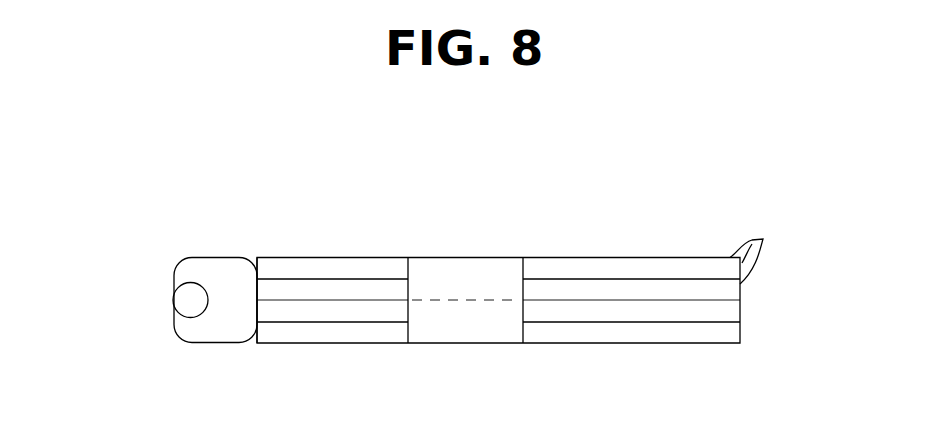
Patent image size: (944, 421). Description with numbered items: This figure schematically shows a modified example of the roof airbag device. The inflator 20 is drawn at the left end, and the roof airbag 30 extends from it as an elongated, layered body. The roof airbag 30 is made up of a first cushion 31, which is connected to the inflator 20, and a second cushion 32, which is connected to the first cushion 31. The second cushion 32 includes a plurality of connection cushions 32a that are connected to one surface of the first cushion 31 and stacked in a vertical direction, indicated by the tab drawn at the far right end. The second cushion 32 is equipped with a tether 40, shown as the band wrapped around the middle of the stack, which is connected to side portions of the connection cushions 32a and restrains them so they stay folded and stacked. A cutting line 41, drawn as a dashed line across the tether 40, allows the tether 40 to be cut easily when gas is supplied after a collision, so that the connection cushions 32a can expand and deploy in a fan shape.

The inflator 20 is at (187, 299).
The roof airbag 30 is at (613, 198).
The first cushion 31 is at (213, 257).
The second cushion 32 is at (585, 257).
The connection cushion 32a is at (777, 256).
The tether 40 is at (438, 343).
The cutting line 41 is at (482, 300).